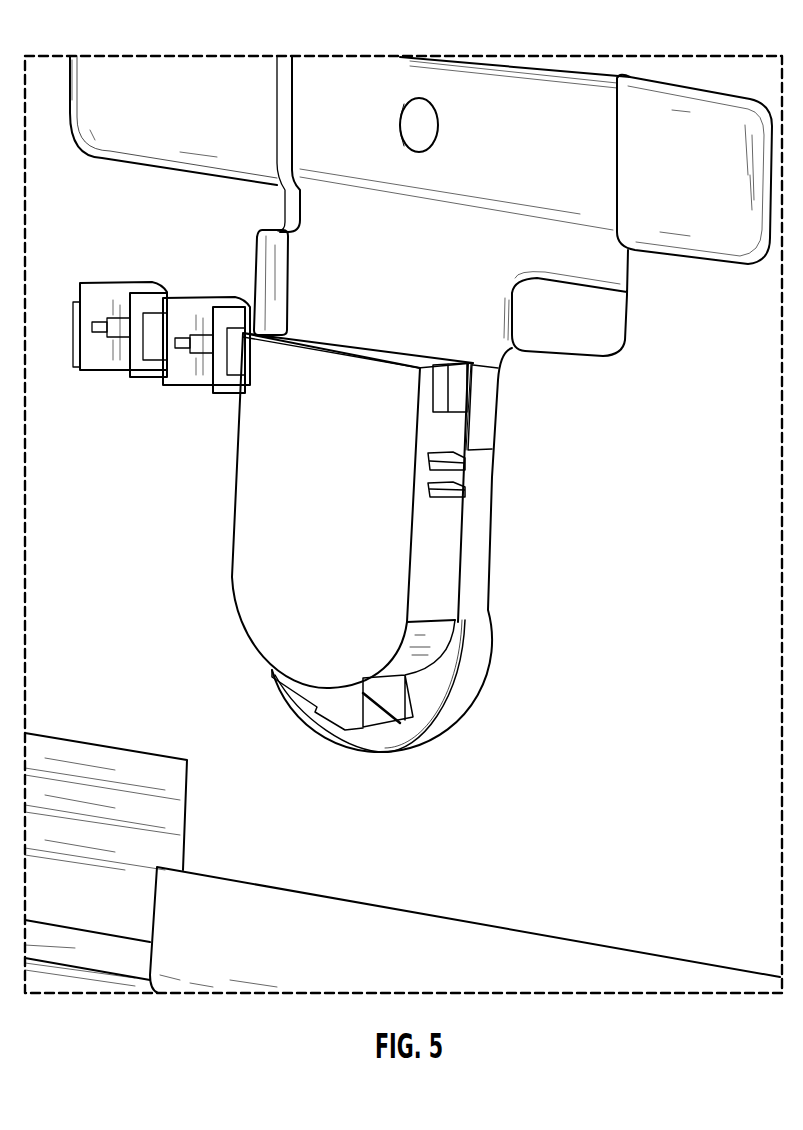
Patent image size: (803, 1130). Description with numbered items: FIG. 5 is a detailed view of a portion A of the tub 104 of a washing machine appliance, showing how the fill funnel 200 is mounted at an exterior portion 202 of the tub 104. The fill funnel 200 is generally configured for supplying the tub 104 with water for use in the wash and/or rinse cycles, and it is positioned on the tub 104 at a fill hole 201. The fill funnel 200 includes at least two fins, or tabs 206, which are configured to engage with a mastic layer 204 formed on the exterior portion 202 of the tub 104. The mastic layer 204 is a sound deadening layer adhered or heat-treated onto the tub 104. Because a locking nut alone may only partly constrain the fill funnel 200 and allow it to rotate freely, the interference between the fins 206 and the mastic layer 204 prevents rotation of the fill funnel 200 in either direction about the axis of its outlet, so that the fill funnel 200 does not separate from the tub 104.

The tub 104 is at (407, 281).
The exterior portion 202 is at (490, 147).
The mastic layer 204 is at (592, 466).
The fins 206 is at (483, 377).
The fill funnel 200 is at (344, 497).
The fill hole 201 is at (480, 612).
The portion A is at (690, 56).